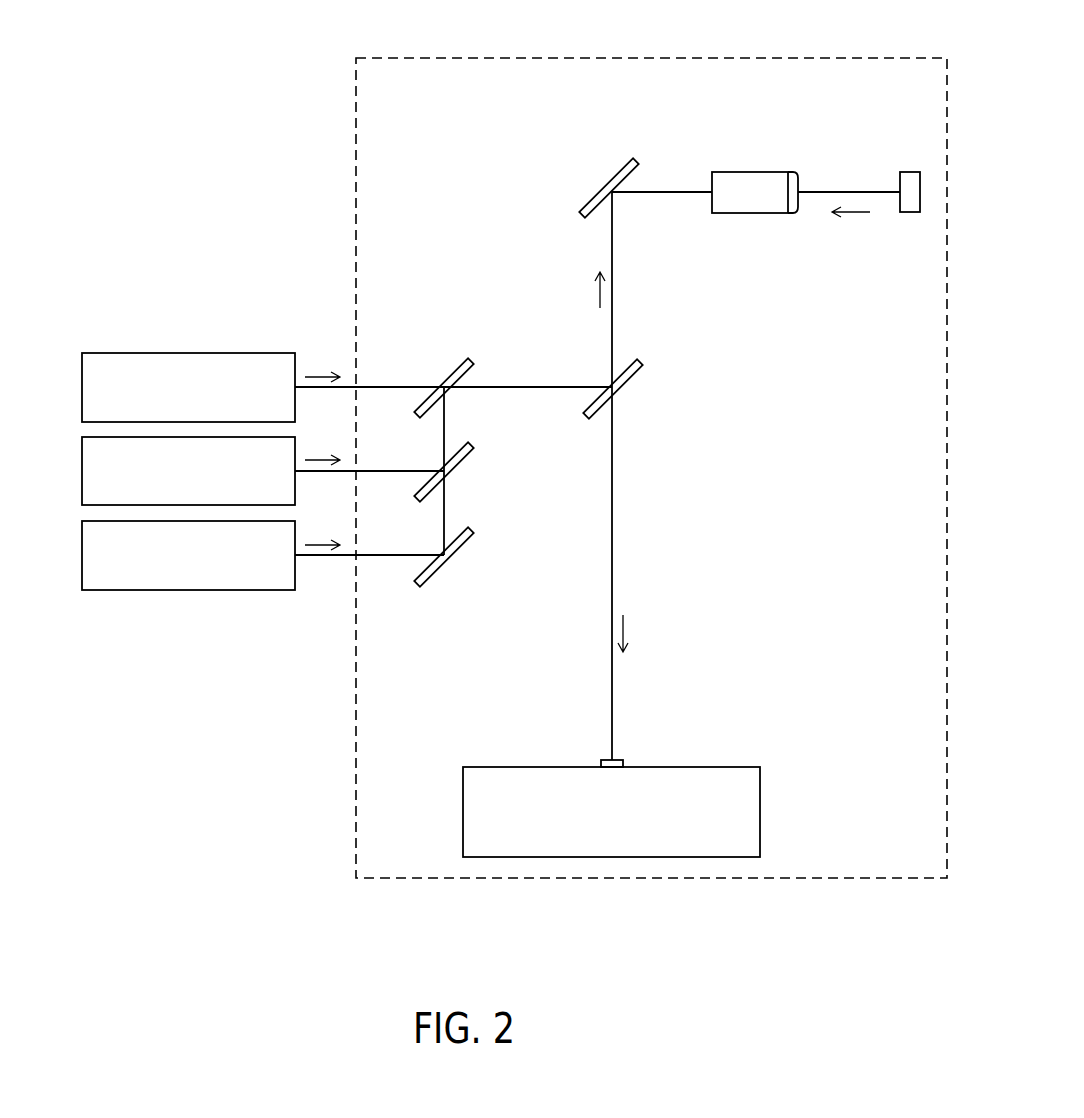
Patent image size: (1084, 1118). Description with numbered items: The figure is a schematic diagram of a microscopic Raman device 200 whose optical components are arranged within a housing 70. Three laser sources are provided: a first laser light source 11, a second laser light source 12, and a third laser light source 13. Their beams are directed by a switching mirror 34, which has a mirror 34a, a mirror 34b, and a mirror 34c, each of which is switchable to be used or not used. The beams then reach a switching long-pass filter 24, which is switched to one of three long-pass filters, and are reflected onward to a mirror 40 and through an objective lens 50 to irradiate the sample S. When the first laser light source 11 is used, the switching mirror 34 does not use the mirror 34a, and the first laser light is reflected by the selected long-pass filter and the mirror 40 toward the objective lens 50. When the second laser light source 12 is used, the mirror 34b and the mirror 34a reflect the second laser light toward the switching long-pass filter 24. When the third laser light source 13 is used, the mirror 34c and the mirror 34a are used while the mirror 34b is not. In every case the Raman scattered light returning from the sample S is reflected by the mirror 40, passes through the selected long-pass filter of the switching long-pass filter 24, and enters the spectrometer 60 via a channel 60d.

The microscopic Raman device 200 is at (347, 39).
The housing 70 is at (355, 241).
The first laser light source 11 is at (90, 388).
The second laser light source 12 is at (90, 471).
The third laser light source 13 is at (90, 555).
The switching mirror 34 is at (485, 485).
The mirror 34a is at (463, 373).
The mirror 34b is at (463, 457).
The mirror 34c is at (464, 569).
The switching long-pass filter 24 is at (633, 378).
The mirror 40 is at (617, 183).
The objective lens 50 is at (749, 180).
The sample S is at (910, 180).
The spectrometer 60 is at (545, 845).
The channel 60d is at (599, 762).